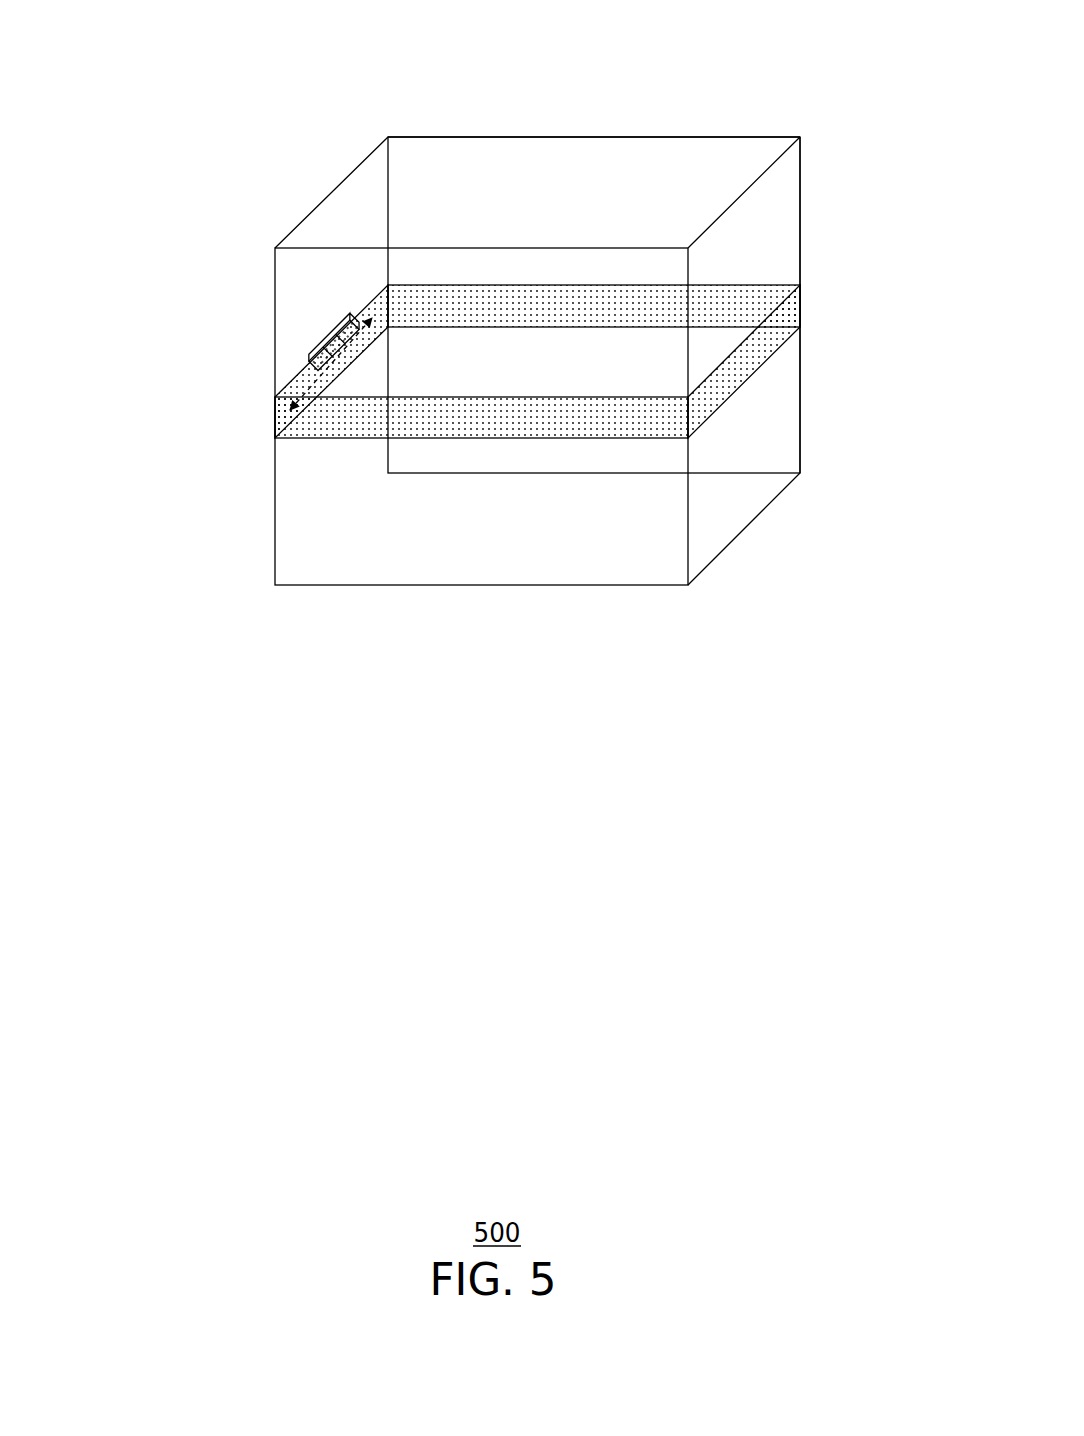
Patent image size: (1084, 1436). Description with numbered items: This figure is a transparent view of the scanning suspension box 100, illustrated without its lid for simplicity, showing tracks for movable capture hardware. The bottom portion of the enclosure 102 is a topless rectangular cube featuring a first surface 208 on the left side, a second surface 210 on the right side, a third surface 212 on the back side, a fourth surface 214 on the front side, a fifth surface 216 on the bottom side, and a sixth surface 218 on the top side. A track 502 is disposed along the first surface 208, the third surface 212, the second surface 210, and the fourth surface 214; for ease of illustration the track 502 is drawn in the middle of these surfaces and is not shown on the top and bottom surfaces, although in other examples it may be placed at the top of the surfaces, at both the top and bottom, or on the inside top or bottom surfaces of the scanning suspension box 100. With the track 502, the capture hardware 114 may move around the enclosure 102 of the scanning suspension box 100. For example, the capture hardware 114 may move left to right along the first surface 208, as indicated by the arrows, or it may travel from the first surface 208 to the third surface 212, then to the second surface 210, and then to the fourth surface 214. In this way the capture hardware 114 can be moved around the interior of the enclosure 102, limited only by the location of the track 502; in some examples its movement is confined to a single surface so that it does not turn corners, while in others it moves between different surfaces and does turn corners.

The scanning suspension box 100 is at (238, 562).
The enclosure 102 is at (262, 346).
The capture hardware 114 is at (338, 380).
The first surface 208 is at (318, 182).
The second surface 210 is at (762, 440).
The third surface 212 is at (596, 95).
The fourth surface 214 is at (477, 628).
The fifth surface 216 is at (768, 548).
The sixth surface 218 is at (711, 160).
The track 502 is at (541, 362).